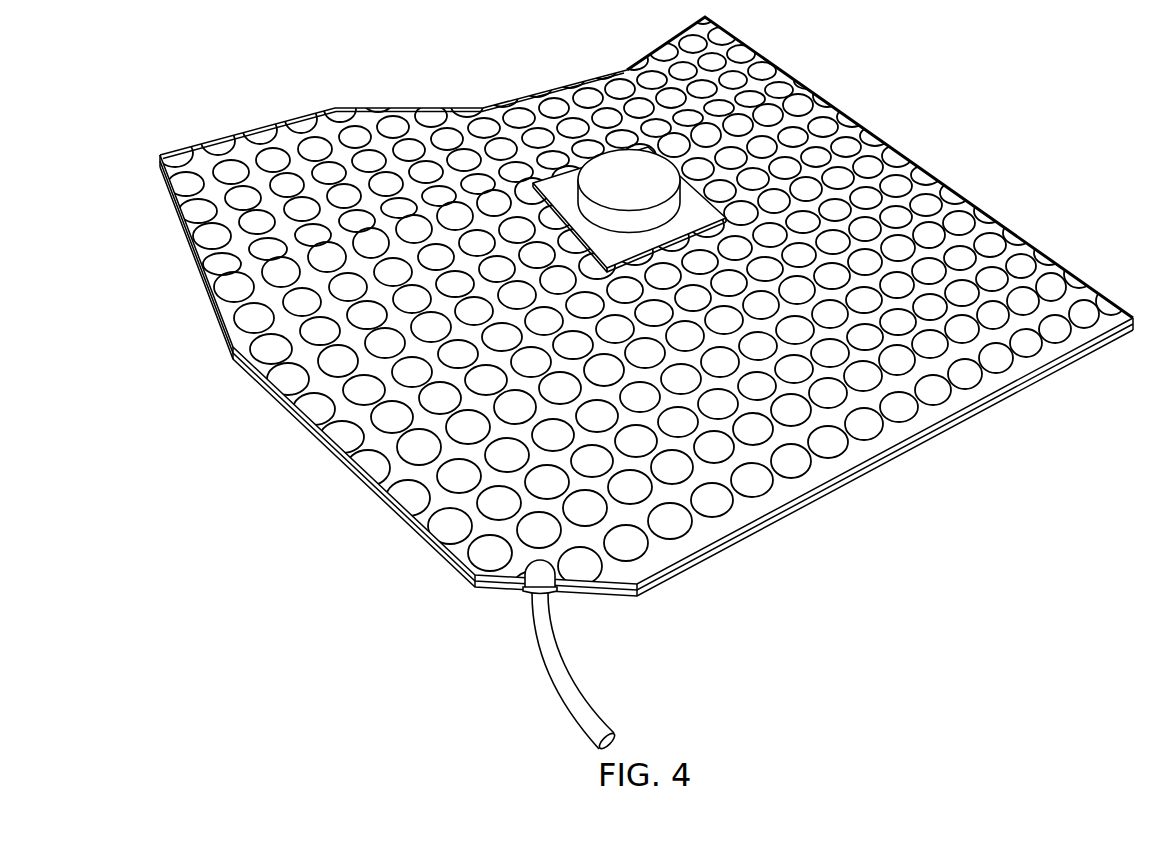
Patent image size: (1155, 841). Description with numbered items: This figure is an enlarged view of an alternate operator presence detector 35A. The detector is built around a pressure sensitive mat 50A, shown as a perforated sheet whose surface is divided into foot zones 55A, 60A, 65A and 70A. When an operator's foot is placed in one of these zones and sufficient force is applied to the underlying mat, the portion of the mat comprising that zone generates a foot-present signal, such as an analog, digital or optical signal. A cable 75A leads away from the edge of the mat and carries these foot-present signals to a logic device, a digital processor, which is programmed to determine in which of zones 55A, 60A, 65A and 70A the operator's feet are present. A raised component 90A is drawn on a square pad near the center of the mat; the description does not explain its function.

The operator presence detector 35A is at (340, 68).
The panel edge 50A is at (832, 103).
The zone 55A is at (767, 117).
The zone 60A is at (977, 268).
The zone 65A is at (422, 455).
The zone 70A is at (298, 206).
The cable 75A is at (563, 680).
The port 90A is at (622, 170).